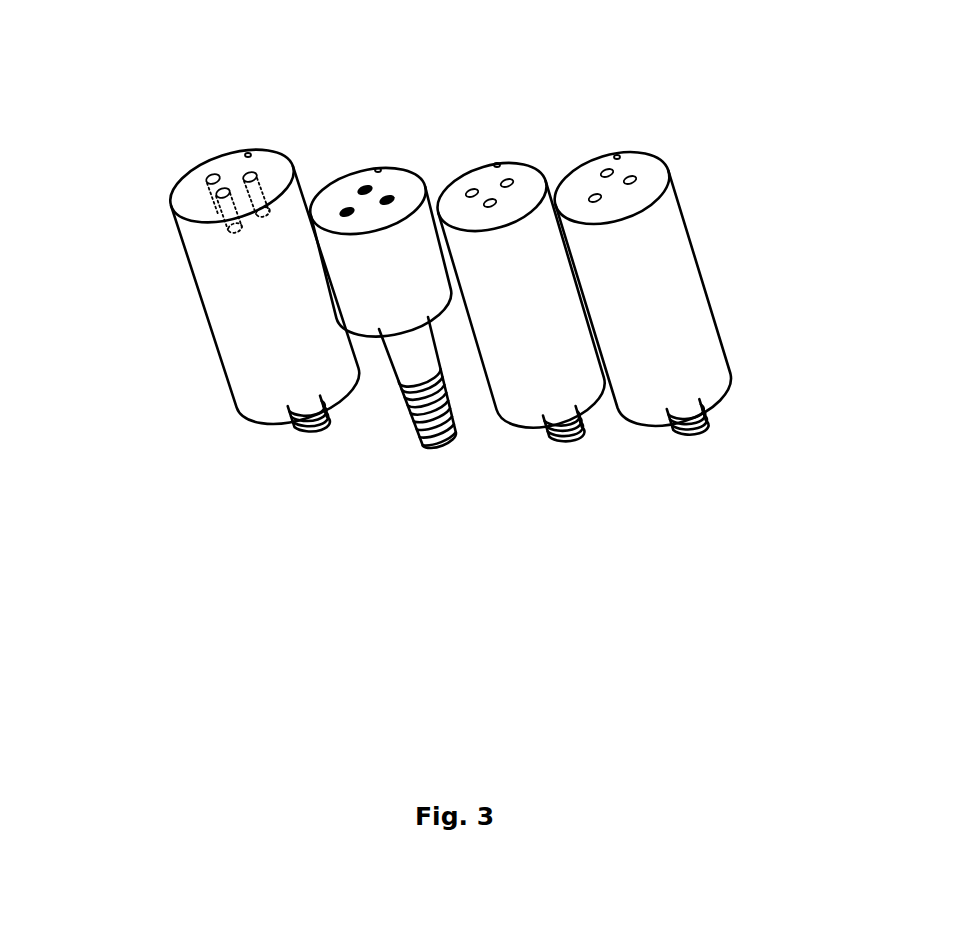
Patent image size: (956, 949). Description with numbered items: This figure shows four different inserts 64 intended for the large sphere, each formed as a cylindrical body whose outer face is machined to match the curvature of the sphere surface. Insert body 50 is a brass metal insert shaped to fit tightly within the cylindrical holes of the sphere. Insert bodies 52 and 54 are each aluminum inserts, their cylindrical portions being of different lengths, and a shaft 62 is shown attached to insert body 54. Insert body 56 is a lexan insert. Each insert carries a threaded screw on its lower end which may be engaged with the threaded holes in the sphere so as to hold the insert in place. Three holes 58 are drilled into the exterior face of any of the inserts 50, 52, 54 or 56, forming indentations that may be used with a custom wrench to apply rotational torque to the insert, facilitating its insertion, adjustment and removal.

The insert body 50 is at (711, 338).
The insert body 52 is at (546, 371).
The insert body 54 is at (375, 409).
The insert body 56 is at (186, 277).
The holes 58 is at (213, 178).
The shaft 62 is at (405, 357).
The inserts 64 is at (617, 157).